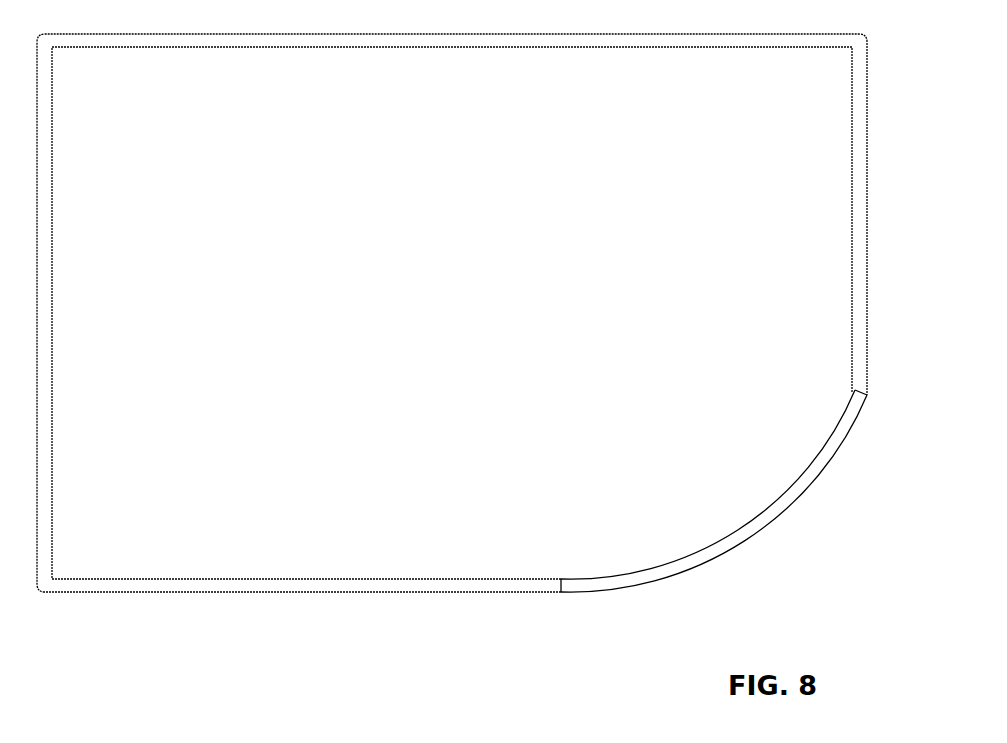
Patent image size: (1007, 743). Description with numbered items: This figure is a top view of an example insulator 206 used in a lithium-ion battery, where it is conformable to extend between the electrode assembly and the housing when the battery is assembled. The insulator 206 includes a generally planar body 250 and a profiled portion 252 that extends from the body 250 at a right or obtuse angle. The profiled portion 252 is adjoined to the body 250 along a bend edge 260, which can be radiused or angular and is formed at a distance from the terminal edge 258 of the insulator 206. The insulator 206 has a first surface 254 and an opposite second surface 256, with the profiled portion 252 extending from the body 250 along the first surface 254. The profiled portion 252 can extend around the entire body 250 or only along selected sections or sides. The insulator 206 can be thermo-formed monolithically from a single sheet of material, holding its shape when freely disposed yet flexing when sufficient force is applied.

The insulator 206 is at (142, 593).
The body 250 is at (415, 288).
The profiled portion 252 is at (307, 583).
The first surface 254 is at (547, 513).
The second surface 256 is at (695, 483).
The terminal edge 258 is at (223, 590).
The bend edge 260 is at (430, 580).